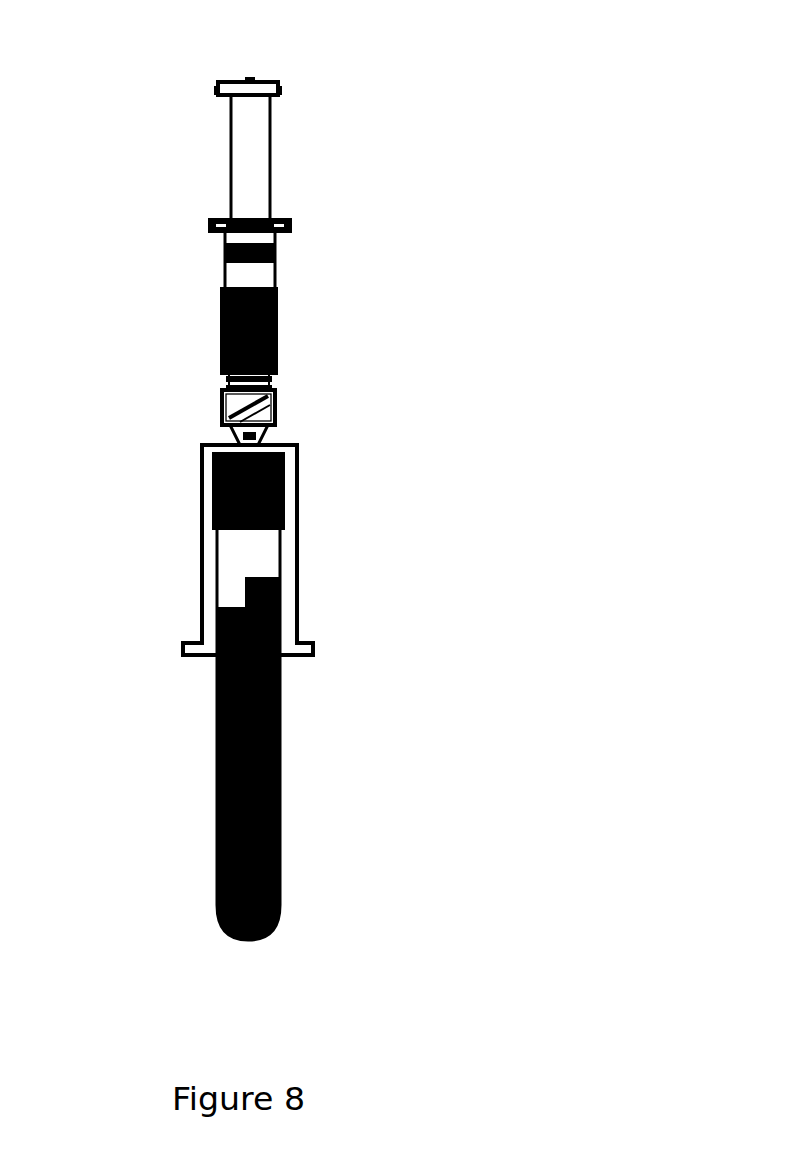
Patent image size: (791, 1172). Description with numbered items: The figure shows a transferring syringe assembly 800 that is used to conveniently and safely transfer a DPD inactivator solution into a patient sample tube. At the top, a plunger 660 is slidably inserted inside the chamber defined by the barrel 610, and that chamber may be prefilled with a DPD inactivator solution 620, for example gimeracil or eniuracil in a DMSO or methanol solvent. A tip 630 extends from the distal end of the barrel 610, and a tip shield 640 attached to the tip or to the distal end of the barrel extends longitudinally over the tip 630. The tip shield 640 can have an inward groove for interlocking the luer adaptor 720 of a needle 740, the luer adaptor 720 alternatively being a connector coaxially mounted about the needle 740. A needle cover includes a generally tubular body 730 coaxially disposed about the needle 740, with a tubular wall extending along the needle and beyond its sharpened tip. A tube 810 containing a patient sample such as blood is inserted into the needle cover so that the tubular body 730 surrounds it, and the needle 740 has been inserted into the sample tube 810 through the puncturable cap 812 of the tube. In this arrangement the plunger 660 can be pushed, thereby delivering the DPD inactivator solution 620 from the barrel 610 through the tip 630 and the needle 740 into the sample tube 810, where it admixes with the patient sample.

The transferring syringe assembly 800 is at (434, 148).
The plunger 660 is at (262, 150).
The barrel 610 is at (223, 273).
The DPD inactivator solution 620 is at (223, 337).
The tip 630 is at (262, 367).
The tip shield 640 is at (220, 412).
The luer adaptor 720 is at (278, 402).
The needle 740 is at (270, 433).
The tubular body 730 is at (197, 588).
The puncturable cap 812 is at (268, 488).
The tube 810 is at (283, 752).